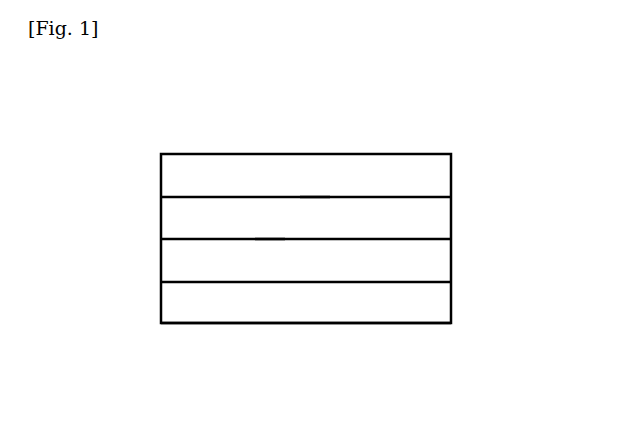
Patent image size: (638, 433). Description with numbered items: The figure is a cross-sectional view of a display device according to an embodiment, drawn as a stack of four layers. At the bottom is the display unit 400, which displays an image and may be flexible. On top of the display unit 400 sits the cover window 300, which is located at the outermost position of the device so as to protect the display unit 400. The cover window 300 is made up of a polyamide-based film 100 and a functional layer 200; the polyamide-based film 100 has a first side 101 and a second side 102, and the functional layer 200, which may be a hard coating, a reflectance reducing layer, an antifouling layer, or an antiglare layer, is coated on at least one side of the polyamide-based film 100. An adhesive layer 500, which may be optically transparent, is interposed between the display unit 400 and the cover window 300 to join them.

The polyamide-based film 100 is at (419, 224).
The first side 101 is at (268, 243).
The second side 102 is at (303, 195).
The functional layer 200 is at (419, 181).
The cover window 300 is at (155, 154).
The display unit 400 is at (419, 306).
The adhesive layer 500 is at (419, 267).